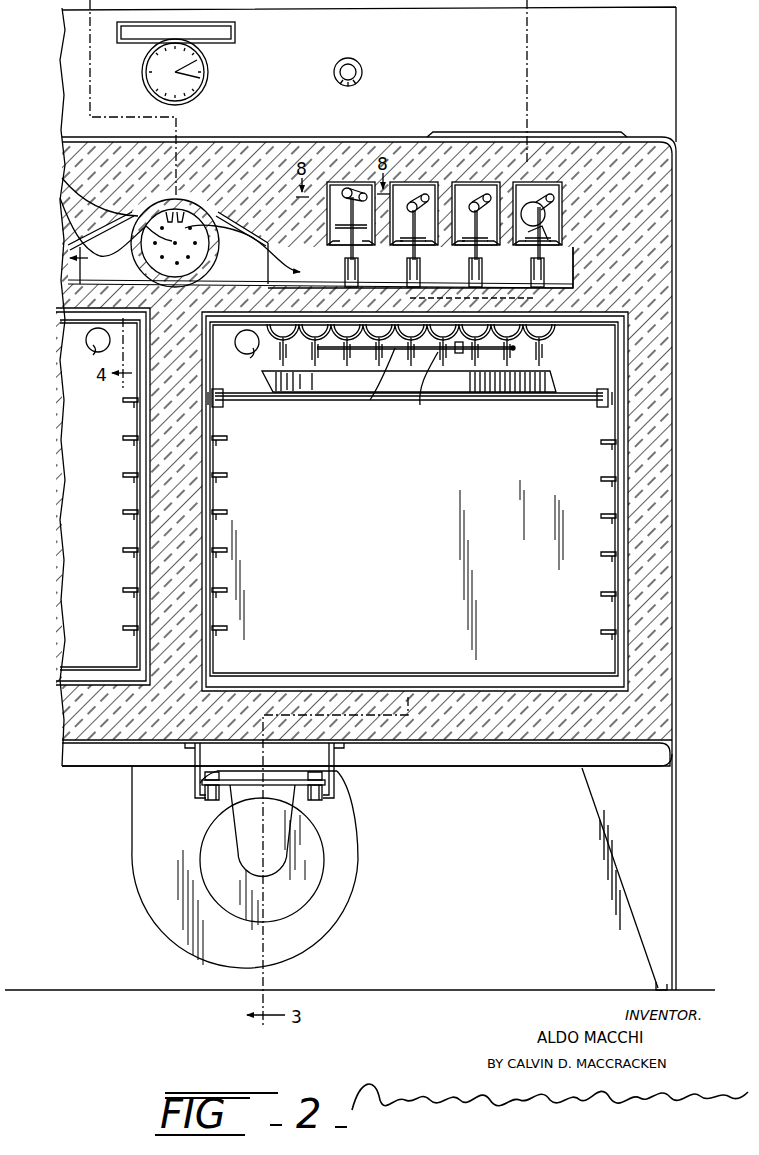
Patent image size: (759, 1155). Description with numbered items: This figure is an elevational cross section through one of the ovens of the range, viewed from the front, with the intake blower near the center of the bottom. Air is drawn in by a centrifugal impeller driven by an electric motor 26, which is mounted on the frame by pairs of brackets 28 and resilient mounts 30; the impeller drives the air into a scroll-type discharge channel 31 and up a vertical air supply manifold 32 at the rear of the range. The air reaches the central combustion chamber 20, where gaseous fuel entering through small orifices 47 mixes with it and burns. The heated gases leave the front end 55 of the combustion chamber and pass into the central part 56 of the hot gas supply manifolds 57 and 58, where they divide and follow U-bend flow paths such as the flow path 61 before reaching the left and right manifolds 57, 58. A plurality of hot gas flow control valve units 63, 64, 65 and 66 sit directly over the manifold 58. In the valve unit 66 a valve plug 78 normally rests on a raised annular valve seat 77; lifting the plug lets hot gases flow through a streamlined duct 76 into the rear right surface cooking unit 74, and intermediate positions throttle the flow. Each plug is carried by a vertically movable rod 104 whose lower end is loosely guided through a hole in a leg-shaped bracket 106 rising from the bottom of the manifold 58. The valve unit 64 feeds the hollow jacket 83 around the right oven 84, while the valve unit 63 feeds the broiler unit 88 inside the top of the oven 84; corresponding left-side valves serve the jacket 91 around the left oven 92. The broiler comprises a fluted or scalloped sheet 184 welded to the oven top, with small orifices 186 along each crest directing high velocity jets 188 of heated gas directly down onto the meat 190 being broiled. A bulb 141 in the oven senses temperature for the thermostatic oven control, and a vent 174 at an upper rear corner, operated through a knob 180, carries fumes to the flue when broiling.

The combustion chamber 20 is at (209, 193).
The knob 180 is at (362, 65).
The rear right surface cooking unit 74 is at (559, 134).
The hot gas flow control valve unit 63 is at (335, 182).
The hot gas flow control valve unit 64 is at (405, 182).
The hot gas flow control valve unit 65 is at (464, 182).
The hot gas flow control valve unit 66 is at (518, 182).
The streamlined duct 76 is at (553, 217).
The valve plug 78 is at (549, 240).
The raised annular valve seat 77 is at (530, 251).
The hot gas supply manifold 58 is at (574, 276).
The vertically movable rod 104 is at (347, 253).
The leg-shaped bracket 106 is at (359, 264).
The front end of the combustion chamber 55 is at (135, 270).
The central part of the hot gas supply manifolds 56 is at (138, 216).
The flow path 61 is at (92, 252).
The hot gas supply manifold 57 is at (65, 233).
The small orifices 47 is at (195, 247).
The vent 174 is at (93, 346).
The fluted or scalloped sheet 184 is at (556, 335).
The small orifices 186 is at (538, 342).
The broiler unit 88 is at (550, 366).
The meat 190 is at (409, 380).
The bulb 141 is at (374, 397).
The high velocity jets 188 is at (425, 397).
The left oven 92 is at (105, 531).
The right oven 84 is at (406, 548).
The jacket 91 is at (147, 607).
The hollow jacket 83 is at (205, 606).
The vertical air supply manifold 32 is at (131, 777).
The brackets 28 is at (197, 768).
The resilient mounts 30 is at (200, 796).
The electric motor 26 is at (327, 878).
The scroll-type discharge channel 31 is at (156, 918).